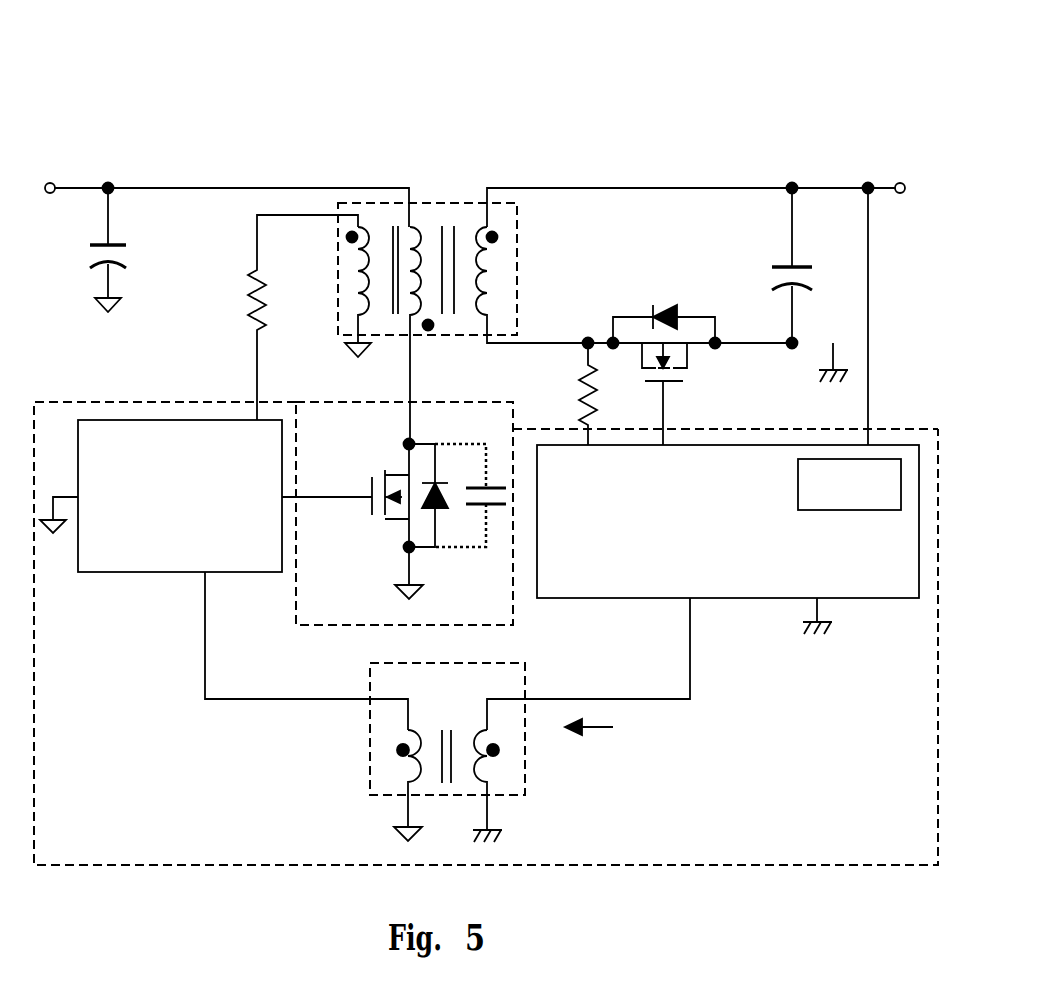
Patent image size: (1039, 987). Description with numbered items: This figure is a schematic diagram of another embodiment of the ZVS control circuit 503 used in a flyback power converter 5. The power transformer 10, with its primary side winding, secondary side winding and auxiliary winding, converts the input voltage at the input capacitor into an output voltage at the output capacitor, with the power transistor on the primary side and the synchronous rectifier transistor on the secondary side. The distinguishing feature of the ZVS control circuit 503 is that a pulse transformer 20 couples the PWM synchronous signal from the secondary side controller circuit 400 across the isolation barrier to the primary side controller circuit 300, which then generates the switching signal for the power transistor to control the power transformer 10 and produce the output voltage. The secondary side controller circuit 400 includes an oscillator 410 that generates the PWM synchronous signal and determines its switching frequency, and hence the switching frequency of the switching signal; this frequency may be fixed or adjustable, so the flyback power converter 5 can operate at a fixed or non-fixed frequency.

The flyback power converter 5 is at (486, 454).
The power transformer 10 is at (518, 217).
The pulse transformer 20 is at (456, 694).
The primary side controller circuit 300 is at (200, 512).
The secondary side controller circuit 400 is at (733, 528).
The oscillator 410 is at (725, 487).
The ZVS control circuit 503 is at (486, 621).